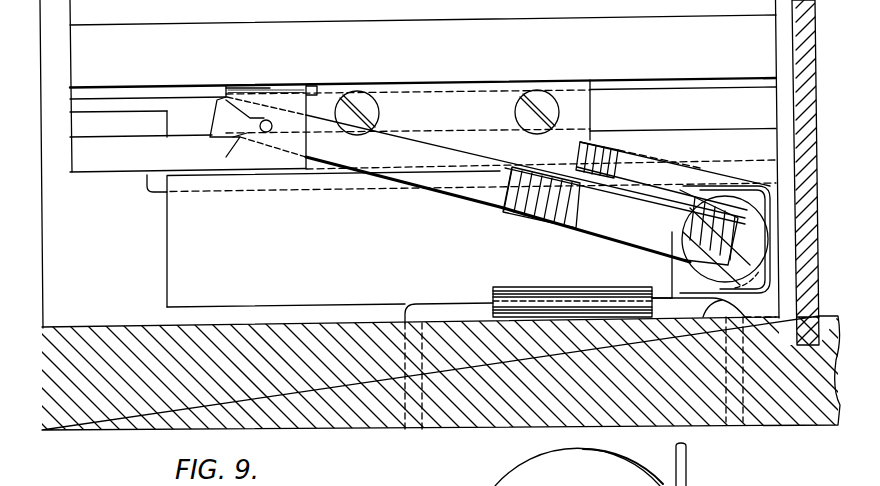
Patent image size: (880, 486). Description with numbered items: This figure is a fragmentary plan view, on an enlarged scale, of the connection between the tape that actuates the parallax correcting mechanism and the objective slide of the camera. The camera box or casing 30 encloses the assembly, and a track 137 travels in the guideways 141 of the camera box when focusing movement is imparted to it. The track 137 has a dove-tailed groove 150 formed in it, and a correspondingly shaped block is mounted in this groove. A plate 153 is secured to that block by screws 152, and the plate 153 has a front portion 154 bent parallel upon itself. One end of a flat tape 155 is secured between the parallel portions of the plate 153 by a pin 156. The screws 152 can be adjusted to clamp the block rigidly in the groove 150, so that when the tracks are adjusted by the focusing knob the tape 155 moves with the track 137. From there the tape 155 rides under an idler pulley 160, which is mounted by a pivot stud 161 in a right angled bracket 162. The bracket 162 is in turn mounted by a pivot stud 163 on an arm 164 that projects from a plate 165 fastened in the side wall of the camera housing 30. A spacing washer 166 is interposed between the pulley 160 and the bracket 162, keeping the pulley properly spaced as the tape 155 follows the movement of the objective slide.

The camera box or casing 30 is at (332, 417).
The track 137 is at (113, 162).
The guideway 141 is at (176, 262).
The dove-tailed groove 150 is at (676, 101).
The screw 152 is at (364, 106).
The plate 153 is at (453, 106).
The front portion 154 is at (290, 101).
The flat tape 155 is at (473, 193).
The pin 156 is at (265, 120).
The idler pulley 160 is at (562, 226).
The pivot stud 161 is at (543, 224).
The right angled bracket 162 is at (715, 180).
The pivot stud 163 is at (700, 268).
The arm 164 is at (768, 281).
The plate 165 is at (512, 284).
The spacing washer 166 is at (580, 167).